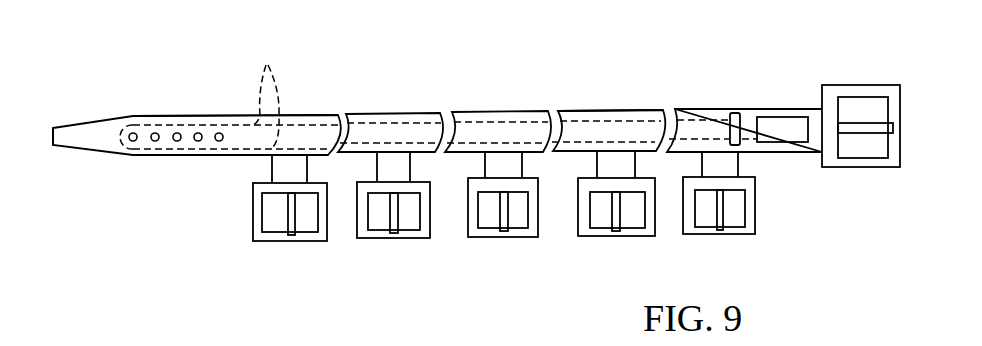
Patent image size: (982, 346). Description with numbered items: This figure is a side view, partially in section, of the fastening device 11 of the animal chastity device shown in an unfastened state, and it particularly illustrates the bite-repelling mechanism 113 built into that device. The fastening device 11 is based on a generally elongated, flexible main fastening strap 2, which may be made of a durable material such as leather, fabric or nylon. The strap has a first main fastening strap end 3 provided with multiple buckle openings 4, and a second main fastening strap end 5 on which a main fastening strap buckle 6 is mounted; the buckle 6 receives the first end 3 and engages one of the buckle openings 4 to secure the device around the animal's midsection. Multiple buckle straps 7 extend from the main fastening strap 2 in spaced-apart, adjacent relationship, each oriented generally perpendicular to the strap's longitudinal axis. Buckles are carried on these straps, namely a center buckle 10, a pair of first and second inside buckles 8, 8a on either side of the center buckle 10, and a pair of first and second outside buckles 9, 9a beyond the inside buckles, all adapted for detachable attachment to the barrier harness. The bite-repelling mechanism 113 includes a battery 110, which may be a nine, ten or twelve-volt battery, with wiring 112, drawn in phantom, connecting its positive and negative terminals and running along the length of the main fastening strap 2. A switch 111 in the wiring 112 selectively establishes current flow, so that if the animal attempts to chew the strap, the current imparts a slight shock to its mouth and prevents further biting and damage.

The main fastening strap 2 is at (497, 123).
The first main fastening strap end 3 is at (90, 142).
The buckle openings 4 is at (199, 141).
The second main fastening strap end 5 is at (817, 132).
The main fastening strap buckle 6 is at (868, 168).
The buckle straps 7 is at (287, 170).
The first inside buckle 8 is at (632, 236).
The second inside buckle 8a is at (405, 238).
The first outside buckle 9 is at (317, 241).
The second outside buckle 9a is at (728, 235).
The center buckle 10 is at (495, 237).
The fastening device 11 is at (232, 100).
The battery 110 is at (777, 117).
The switch 111 is at (738, 110).
The wiring 112 is at (270, 72).
The bite-repelling mechanism 113 is at (640, 112).